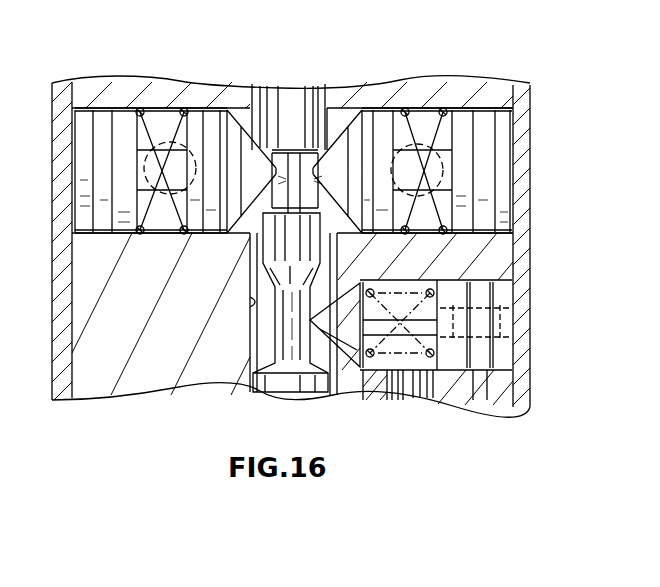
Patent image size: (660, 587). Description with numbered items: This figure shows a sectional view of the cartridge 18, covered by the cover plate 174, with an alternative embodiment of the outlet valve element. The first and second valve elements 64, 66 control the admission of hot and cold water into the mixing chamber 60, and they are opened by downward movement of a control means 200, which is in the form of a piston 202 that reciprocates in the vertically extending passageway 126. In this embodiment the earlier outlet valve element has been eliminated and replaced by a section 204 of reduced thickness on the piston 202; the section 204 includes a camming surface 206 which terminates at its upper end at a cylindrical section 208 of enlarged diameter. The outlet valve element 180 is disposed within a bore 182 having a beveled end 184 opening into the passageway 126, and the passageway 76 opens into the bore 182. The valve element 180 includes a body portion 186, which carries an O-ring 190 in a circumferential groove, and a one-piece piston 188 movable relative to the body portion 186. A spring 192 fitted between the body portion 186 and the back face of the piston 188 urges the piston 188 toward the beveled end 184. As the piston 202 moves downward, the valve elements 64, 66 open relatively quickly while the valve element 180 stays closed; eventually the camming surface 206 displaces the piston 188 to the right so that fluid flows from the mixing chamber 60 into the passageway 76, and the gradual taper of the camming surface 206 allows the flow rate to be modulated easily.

The control means 200 is at (318, 52).
The first valve element 64 is at (183, 96).
The piston 202 is at (278, 98).
The mixing chamber 60 is at (336, 98).
The second valve element 66 is at (393, 98).
The cartridge 18 is at (424, 95).
The cover plate 174 is at (523, 110).
The outlet valve element 180 is at (490, 255).
The cylindrical section 208 is at (278, 245).
The camming surface 206 is at (280, 272).
The passageway 126 is at (249, 302).
The section of reduced thickness 204 is at (290, 326).
The beveled end 184 is at (352, 289).
The bore 182 is at (392, 280).
The piston 188 is at (357, 348).
The spring 192 is at (378, 371).
The passageway 76 is at (422, 398).
The O-ring 190 is at (482, 370).
The body portion 186 is at (504, 368).